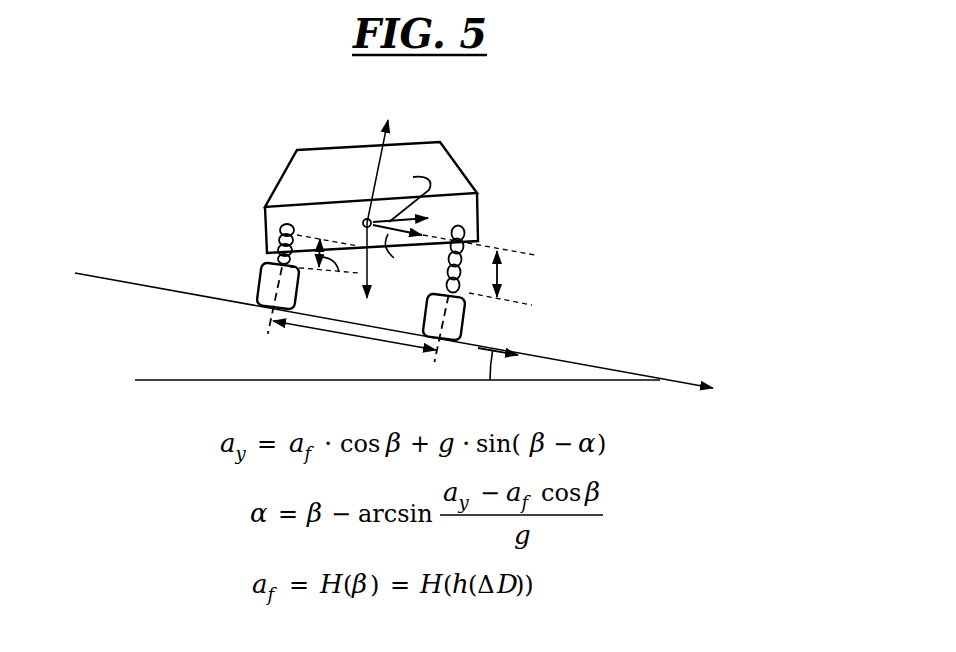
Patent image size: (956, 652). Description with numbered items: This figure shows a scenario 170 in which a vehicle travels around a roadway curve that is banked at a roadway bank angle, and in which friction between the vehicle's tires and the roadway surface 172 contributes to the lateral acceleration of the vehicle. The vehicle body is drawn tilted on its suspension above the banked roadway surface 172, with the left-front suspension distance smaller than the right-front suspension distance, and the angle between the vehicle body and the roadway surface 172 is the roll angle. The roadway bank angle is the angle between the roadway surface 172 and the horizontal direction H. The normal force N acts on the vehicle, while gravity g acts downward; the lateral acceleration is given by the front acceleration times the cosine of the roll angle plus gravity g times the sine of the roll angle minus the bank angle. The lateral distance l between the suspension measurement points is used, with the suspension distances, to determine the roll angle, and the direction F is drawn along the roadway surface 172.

The scenario 170 is at (459, 233).
The roadway surface 172 is at (112, 278).
The horizontal direction H is at (158, 380).
The normal force N is at (383, 156).
The gravity g is at (367, 272).
The lateral distance l is at (354, 344).
The forward direction along road F is at (501, 336).